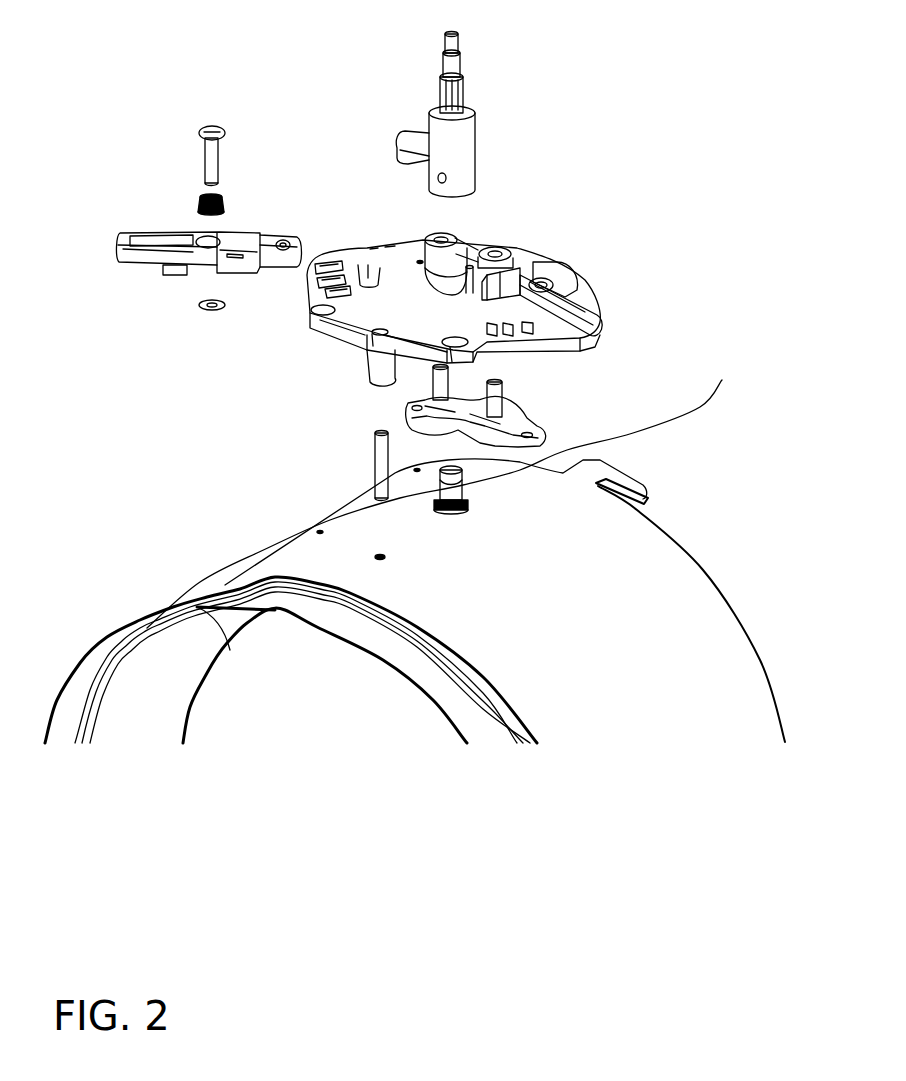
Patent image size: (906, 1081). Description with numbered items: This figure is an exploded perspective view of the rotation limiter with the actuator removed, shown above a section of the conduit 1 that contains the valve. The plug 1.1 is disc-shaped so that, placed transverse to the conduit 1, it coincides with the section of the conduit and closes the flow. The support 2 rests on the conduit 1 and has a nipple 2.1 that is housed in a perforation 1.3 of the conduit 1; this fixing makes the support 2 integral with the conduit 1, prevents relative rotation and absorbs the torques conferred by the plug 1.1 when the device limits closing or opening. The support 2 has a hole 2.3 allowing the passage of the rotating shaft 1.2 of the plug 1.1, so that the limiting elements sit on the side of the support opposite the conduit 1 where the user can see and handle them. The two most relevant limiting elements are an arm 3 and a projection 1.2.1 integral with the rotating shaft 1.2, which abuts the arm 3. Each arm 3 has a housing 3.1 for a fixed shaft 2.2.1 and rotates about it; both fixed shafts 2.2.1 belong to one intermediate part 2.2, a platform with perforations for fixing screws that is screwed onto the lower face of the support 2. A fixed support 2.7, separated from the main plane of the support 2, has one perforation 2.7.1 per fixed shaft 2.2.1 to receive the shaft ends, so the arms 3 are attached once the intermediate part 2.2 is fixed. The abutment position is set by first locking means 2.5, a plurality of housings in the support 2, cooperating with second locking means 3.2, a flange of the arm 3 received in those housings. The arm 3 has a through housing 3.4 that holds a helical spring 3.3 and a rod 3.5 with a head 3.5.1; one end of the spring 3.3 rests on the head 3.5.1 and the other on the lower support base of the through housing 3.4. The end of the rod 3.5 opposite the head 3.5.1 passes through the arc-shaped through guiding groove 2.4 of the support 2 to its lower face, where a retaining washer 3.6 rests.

The conduit 1 is at (675, 620).
The plug 1.1 is at (197, 607).
The rotating shaft 1.2 is at (455, 480).
The projection 1.2.1 is at (457, 150).
The perforation 1.3 is at (380, 556).
The support 2 is at (547, 243).
The nipple 2.1 is at (373, 460).
The intermediate part 2.2 is at (534, 410).
The fixed shaft 2.2.1 is at (505, 385).
The hole 2.3 is at (443, 287).
The through guiding groove 2.4 is at (363, 265).
The first locking means 2.5 is at (326, 270).
The fixed support 2.7 is at (445, 237).
The perforation 2.7.1 is at (460, 232).
The arm 3 is at (128, 268).
The housing 3.1 is at (318, 264).
The flange 3.2 is at (177, 275).
The helical spring 3.3 is at (223, 203).
The through housing 3.4 is at (207, 232).
The rod 3.5 is at (203, 167).
The head 3.5.1 is at (223, 133).
The retaining washer 3.6 is at (212, 311).